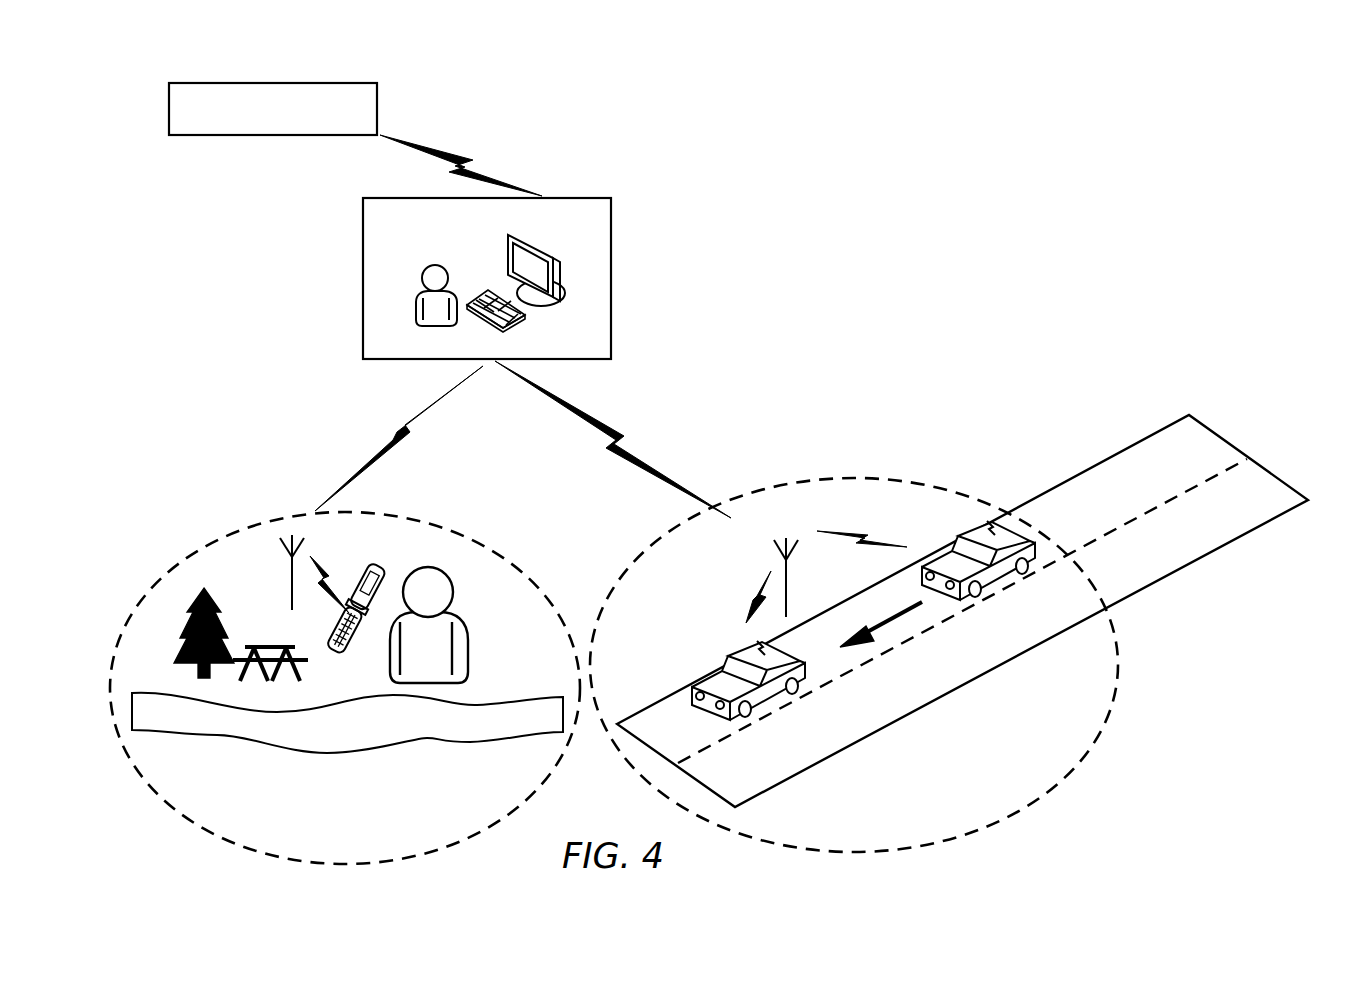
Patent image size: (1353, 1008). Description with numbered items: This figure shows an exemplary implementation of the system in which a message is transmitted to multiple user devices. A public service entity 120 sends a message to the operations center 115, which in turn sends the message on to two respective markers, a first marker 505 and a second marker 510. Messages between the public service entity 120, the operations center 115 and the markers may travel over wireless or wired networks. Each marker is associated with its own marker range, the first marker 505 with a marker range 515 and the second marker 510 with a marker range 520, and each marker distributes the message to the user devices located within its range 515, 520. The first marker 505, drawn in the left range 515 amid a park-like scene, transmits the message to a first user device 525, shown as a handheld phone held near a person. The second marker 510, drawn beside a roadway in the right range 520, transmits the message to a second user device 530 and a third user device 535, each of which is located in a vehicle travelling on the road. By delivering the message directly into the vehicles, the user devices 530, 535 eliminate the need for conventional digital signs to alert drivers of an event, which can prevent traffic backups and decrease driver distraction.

The public service entity 120 is at (190, 83).
The operations center 115 is at (611, 222).
The first marker 505 is at (288, 572).
The second marker 510 is at (782, 563).
The marker range 515 is at (470, 538).
The marker range 520 is at (947, 490).
The first user device 525 is at (371, 566).
The second user device 530 is at (826, 679).
The third user device 535 is at (1043, 537).